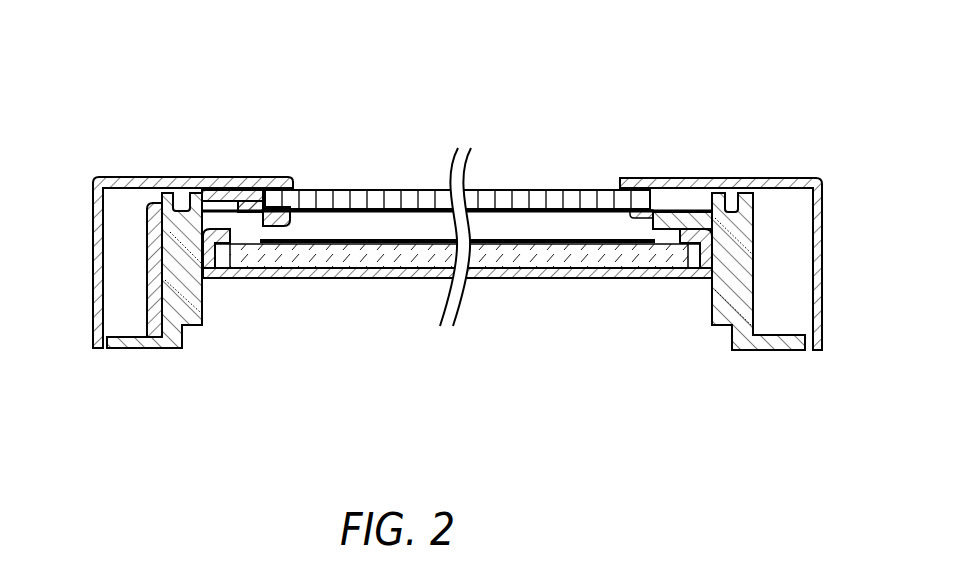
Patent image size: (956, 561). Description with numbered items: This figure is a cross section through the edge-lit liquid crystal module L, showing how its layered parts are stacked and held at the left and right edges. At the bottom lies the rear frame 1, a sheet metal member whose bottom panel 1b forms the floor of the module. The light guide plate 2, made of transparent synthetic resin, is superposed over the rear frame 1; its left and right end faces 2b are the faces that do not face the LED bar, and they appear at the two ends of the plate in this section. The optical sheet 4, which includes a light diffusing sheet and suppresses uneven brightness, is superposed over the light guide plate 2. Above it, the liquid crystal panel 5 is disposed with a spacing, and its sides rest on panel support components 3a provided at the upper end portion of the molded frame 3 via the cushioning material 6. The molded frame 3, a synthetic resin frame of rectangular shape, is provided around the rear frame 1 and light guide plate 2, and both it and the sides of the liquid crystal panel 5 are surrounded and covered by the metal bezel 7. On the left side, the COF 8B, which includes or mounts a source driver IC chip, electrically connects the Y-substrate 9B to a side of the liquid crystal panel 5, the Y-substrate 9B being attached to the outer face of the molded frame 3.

The liquid crystal module L is at (752, 143).
The bezel 7 is at (100, 177).
The Y-substrate 9B is at (148, 274).
The molded frame 3 is at (188, 294).
The clip-on-film (COF) 8B is at (220, 190).
The cushioning material 6 is at (272, 210).
The liquid crystal panel 5 is at (522, 190).
The optical sheet 4 is at (390, 240).
The end face of light guide plate 2b is at (219, 248).
The rear frame 1 is at (511, 279).
The bottom panel 1b is at (413, 278).
The light guide plate 2 is at (575, 279).
The panel support component 3a is at (280, 252).